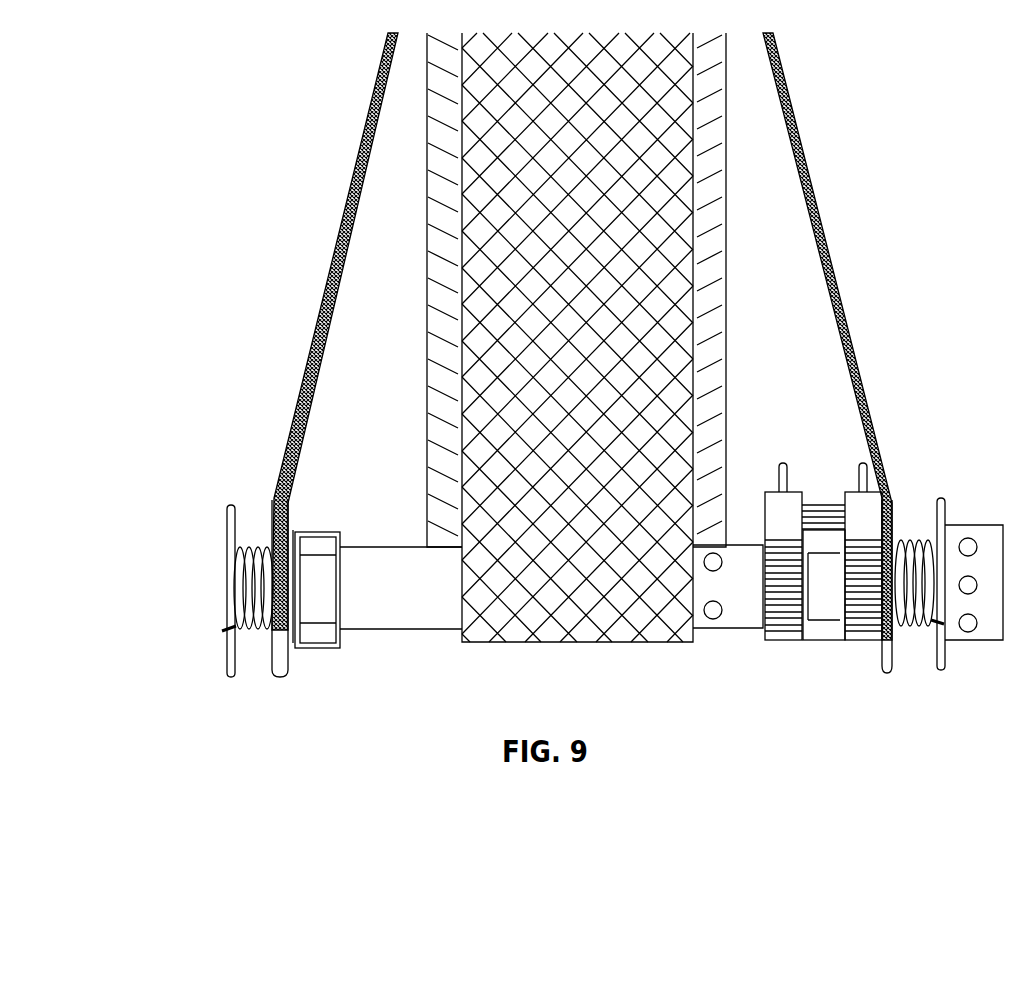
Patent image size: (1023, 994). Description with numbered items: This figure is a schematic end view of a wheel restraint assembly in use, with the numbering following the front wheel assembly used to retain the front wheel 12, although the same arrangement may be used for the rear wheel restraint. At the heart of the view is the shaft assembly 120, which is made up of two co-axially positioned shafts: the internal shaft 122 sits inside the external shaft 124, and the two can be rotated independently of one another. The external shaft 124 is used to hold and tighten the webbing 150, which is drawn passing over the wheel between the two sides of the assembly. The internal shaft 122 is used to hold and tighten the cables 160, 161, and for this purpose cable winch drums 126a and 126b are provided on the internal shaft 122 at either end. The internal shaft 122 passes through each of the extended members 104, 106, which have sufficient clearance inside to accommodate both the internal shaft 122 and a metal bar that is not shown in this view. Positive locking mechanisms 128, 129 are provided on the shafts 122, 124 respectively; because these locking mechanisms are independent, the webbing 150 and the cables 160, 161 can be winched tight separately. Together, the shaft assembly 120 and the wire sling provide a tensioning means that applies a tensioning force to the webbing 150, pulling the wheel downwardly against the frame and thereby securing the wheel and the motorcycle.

The front wheel 12 is at (428, 227).
The extended member 104 is at (317, 532).
The extended member 106 is at (832, 642).
The shaft assembly 120 is at (192, 583).
The internal shaft 122 is at (317, 612).
The external shaft 124 is at (393, 547).
The cable winch drum 126a is at (255, 525).
The cable winch drum 126b is at (917, 504).
The positive locking mechanism 128 is at (805, 482).
The positive locking mechanism 129 is at (866, 468).
The webbing 150 is at (658, 300).
The cable 160 is at (803, 148).
The cable 161 is at (334, 210).